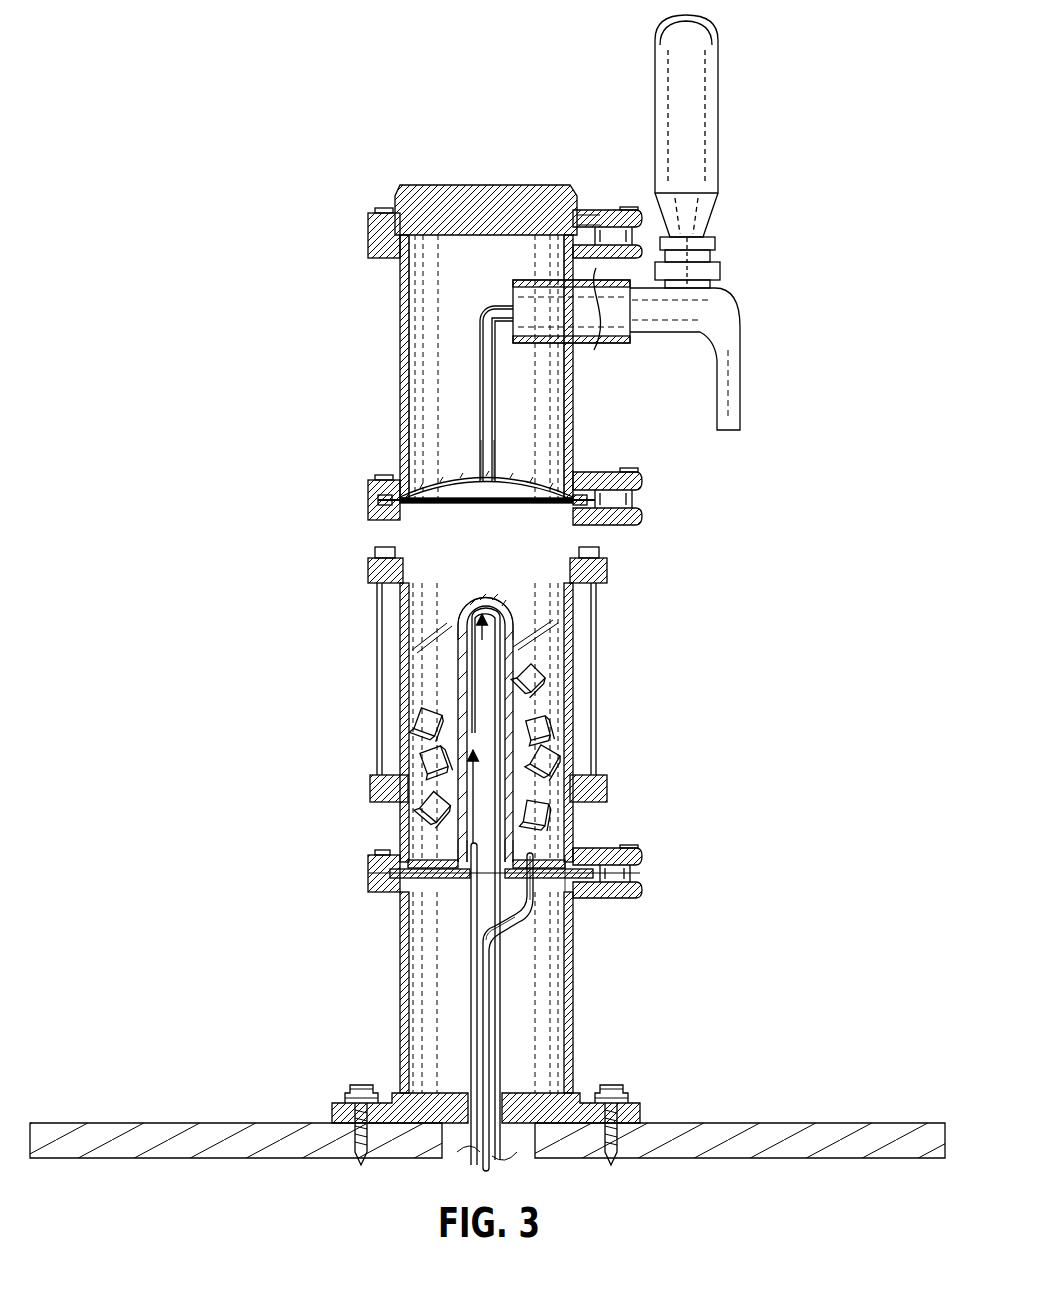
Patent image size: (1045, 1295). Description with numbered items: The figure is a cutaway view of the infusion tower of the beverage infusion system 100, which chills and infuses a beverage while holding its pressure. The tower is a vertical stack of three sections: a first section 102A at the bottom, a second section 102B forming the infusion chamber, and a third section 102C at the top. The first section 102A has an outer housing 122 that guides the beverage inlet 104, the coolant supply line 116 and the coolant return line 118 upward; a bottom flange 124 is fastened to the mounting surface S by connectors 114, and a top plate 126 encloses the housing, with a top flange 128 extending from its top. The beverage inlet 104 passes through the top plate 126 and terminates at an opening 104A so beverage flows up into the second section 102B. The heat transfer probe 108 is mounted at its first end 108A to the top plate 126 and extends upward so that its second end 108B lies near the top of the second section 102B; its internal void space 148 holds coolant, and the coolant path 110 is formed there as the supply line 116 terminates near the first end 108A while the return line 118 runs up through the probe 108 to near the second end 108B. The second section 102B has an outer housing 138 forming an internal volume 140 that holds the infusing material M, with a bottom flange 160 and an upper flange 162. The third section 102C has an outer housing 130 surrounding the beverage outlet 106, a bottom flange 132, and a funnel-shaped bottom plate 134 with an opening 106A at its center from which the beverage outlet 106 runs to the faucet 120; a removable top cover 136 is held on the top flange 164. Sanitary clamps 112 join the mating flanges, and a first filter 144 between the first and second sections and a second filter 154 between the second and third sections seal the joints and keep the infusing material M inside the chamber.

The beverage infusion system 100 is at (786, 52).
The faucet 120 is at (697, 153).
The top cover 136 is at (456, 200).
The outer housing 130 is at (400, 345).
The third section 102C is at (582, 402).
The beverage outlet 106 is at (480, 318).
The opening 106A is at (488, 470).
The bottom plate 134 is at (450, 478).
The second filter 154 is at (490, 503).
The sanitary clamp 112 is at (607, 217).
The top flange 164 is at (584, 216).
The bottom flange 132 is at (380, 520).
The upper flange 162 is at (590, 517).
The first filter 144 is at (407, 857).
The outer housing 138 is at (380, 665).
The internal volume 140 is at (405, 635).
The second section 102B is at (606, 693).
The infusing material M is at (547, 813).
The heat transfer probe 108 is at (513, 648).
The second end 108B is at (493, 600).
The first end 108A is at (418, 890).
The coolant path 110 is at (471, 710).
The internal void space 148 is at (482, 660).
The top flange 128 is at (390, 885).
The bottom flange 160 is at (393, 868).
The top plate 126 is at (572, 833).
The first section 102A is at (581, 996).
The coolant supply line 116 is at (470, 1010).
The coolant return line 118 is at (500, 997).
The beverage inlet 104 is at (517, 920).
The opening 104A is at (535, 870).
The outer housing 122 is at (573, 1033).
The bottom flange 124 is at (590, 1093).
The connectors 114 is at (345, 1090).
The mounting surface S is at (790, 1120).